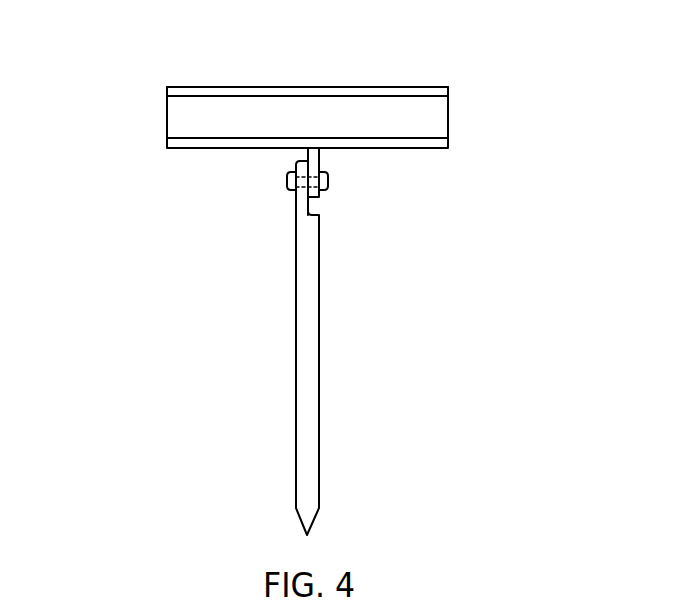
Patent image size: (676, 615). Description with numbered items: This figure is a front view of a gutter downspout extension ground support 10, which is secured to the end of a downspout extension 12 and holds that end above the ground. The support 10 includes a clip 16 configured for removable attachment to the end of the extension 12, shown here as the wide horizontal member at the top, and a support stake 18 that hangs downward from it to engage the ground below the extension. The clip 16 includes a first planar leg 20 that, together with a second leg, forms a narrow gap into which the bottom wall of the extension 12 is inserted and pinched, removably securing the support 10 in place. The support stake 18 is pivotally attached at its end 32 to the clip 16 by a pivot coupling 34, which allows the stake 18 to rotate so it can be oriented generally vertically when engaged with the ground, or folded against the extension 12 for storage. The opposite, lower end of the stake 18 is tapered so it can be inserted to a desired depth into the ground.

The gutter downspout extension ground support 10 is at (528, 70).
The downspout extension 12 is at (532, 602).
The clip 16 is at (253, 80).
The support stake 18 is at (263, 348).
The first planar leg 20 is at (247, 87).
The end of support stake 32 is at (295, 203).
The pivot coupling 34 is at (328, 182).